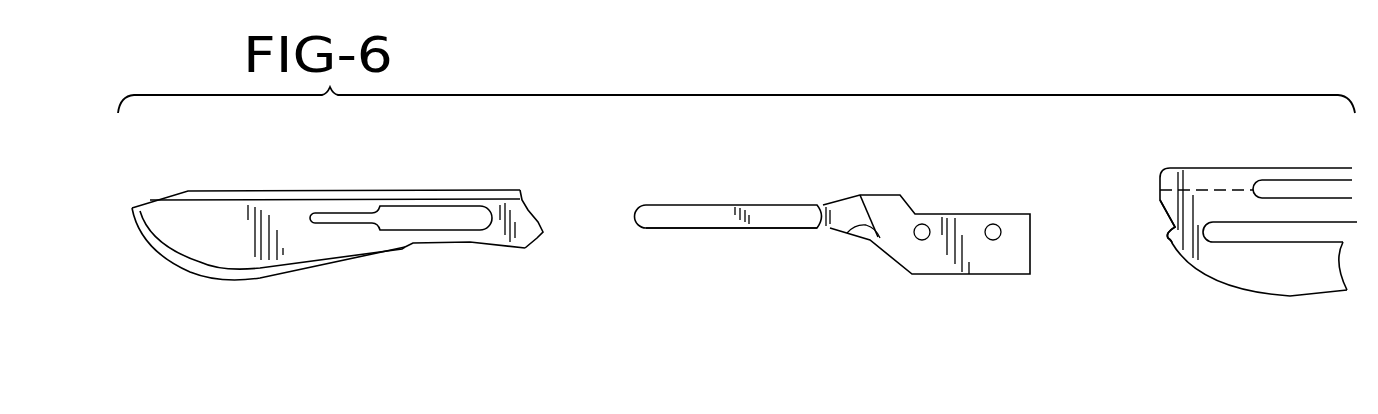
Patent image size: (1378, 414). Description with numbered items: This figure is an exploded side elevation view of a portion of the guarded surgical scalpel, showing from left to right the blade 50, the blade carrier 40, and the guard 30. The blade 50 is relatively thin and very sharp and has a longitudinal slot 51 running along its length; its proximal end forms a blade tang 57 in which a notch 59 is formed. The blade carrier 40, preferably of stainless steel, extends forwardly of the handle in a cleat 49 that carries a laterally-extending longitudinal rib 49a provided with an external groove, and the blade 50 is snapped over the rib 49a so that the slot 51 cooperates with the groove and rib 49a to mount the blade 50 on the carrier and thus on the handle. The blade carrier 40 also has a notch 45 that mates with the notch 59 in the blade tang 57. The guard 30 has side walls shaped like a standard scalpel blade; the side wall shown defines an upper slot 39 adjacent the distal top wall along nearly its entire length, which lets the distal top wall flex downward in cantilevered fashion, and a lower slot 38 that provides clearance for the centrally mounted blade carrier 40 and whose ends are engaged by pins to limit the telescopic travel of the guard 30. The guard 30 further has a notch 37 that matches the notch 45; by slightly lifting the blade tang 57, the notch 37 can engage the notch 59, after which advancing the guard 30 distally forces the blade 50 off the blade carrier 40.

The blade 50 is at (242, 225).
The longitudinal slot 51 is at (432, 212).
The blade tang 57 is at (472, 243).
The notch 59 is at (540, 235).
The cleat 49 is at (725, 205).
The longitudinal rib 49a is at (717, 228).
The notch 45 is at (838, 228).
The blade carrier 40 is at (943, 214).
The notch 37 is at (1166, 230).
The upper slot 39 is at (1310, 187).
The guard 30 is at (1237, 272).
The lower slot 38 is at (1310, 232).